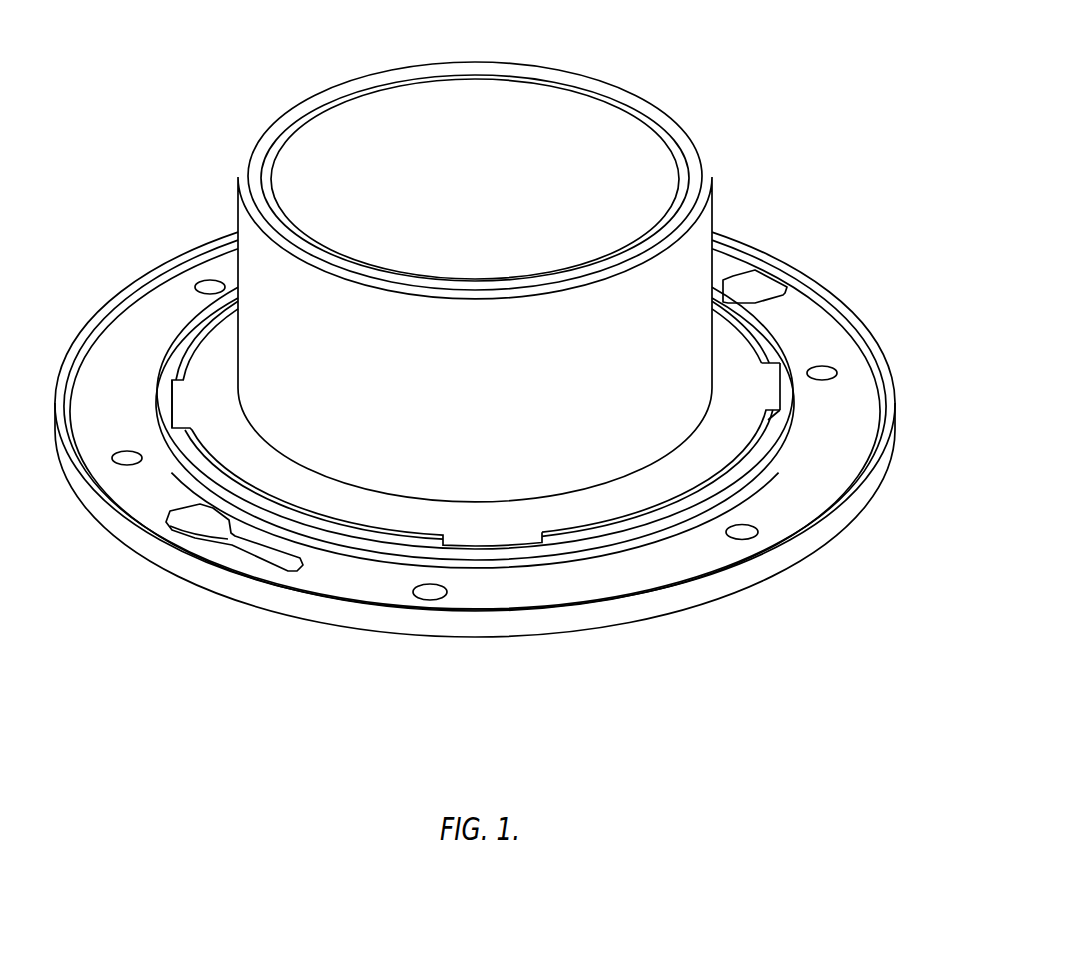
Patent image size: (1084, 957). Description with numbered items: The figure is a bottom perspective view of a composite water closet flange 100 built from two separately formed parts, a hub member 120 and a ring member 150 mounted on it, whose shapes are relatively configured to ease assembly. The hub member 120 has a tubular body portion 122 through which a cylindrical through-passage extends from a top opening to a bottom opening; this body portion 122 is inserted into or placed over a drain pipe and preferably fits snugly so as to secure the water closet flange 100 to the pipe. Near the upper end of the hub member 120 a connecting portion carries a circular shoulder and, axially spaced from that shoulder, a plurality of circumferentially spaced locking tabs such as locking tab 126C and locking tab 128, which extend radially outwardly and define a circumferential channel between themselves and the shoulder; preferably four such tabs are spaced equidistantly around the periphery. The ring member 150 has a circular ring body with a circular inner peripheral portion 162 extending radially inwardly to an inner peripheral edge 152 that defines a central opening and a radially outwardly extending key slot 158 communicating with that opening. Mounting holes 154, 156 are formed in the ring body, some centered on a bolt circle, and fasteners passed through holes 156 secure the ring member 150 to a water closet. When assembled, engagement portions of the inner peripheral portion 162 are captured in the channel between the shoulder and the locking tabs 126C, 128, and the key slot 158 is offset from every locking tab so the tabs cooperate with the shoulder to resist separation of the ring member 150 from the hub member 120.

The water closet flange 100 is at (483, 359).
The hub member 120 is at (505, 282).
The tubular body portion 122 is at (258, 283).
The locking tab 126C is at (772, 374).
The locking tab 128 is at (180, 407).
The ring member 150 is at (483, 472).
The inner peripheral edge 152 is at (393, 545).
The mounting hole 154 is at (442, 598).
The mounting hole 156 is at (222, 548).
The key slot 158 is at (670, 513).
The inner peripheral portion 162 is at (790, 437).